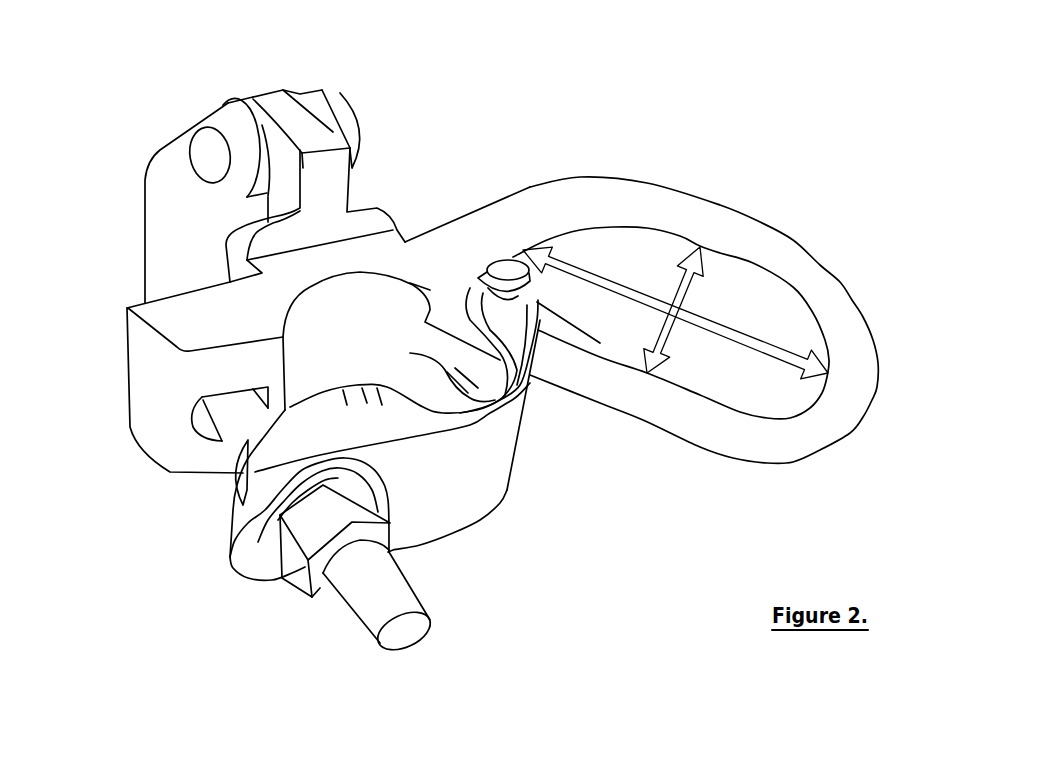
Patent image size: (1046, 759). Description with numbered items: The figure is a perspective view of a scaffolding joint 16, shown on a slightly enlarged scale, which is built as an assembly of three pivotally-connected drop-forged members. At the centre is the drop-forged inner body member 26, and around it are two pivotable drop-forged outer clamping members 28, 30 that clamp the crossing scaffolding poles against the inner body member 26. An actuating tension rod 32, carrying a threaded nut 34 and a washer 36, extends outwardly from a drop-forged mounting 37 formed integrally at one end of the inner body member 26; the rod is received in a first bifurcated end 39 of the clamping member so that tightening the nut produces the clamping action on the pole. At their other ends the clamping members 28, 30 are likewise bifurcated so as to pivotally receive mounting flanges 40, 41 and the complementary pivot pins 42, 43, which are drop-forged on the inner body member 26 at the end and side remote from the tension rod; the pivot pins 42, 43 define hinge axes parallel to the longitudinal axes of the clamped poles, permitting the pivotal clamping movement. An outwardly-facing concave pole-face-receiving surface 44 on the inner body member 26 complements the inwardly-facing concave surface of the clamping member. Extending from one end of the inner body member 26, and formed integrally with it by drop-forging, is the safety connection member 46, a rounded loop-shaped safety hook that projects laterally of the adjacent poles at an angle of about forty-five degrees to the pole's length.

The scaffolding joint 16 is at (390, 192).
The inner body member 26 is at (197, 350).
The outer clamping member 28 is at (484, 487).
The outer clamping member 30 is at (157, 262).
The actuating tension rod 32 is at (397, 637).
The threaded nut 34 is at (300, 572).
The washer 36 is at (272, 505).
The mounting 37 is at (155, 342).
The first bifurcated end 39 is at (262, 469).
The mounting flange 40 is at (450, 335).
The mounting flange 41 is at (302, 128).
The pivot pin 42 is at (508, 263).
The pivot pin 43 is at (213, 160).
The concave scaffolding pole-face-receiving surface 44 is at (373, 345).
The safety connection member 46 is at (850, 387).